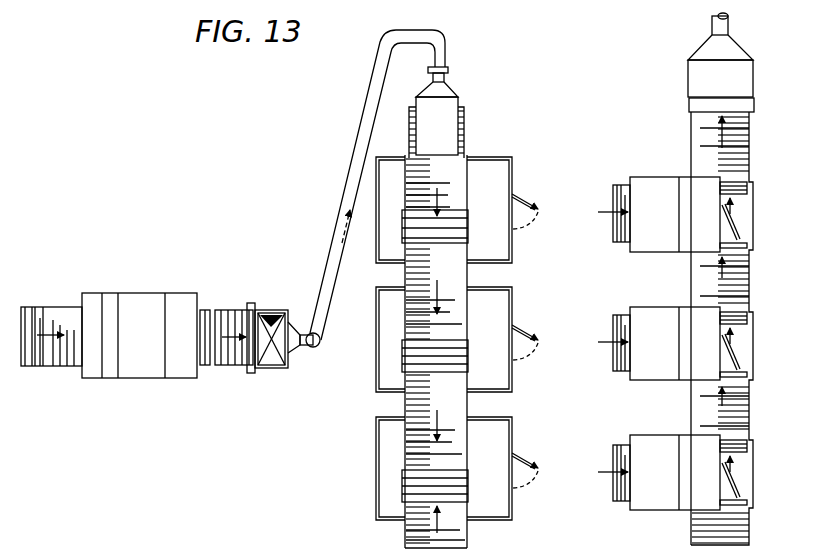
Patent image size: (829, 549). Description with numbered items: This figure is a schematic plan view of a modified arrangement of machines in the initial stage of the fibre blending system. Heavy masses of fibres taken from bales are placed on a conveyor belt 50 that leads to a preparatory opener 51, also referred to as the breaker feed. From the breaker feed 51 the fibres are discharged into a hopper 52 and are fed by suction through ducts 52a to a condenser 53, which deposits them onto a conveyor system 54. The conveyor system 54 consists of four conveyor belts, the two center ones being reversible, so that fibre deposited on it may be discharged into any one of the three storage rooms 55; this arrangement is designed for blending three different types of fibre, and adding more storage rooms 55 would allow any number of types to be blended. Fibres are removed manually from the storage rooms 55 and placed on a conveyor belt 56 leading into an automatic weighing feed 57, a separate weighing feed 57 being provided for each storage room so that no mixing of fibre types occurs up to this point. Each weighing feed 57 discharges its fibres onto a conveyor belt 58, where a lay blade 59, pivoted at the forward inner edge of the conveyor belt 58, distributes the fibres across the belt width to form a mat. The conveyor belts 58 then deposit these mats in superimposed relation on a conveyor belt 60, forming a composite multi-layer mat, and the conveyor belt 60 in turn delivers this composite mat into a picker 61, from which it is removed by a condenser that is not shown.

The conveyor belt 50 is at (43, 307).
The preparatory opener 51 is at (133, 297).
The hopper 52 is at (268, 303).
The ducts 52a is at (352, 188).
The condenser 53 is at (453, 115).
The conveyor system 54 is at (460, 278).
The storage rooms 55 is at (505, 183).
The conveyor belt 56 is at (618, 187).
The automatic weighing feed 57 is at (657, 182).
The conveyor belt 58 is at (742, 197).
The lay blade 59 is at (738, 238).
The conveyor belt 60 is at (742, 296).
The picker 61 is at (705, 76).